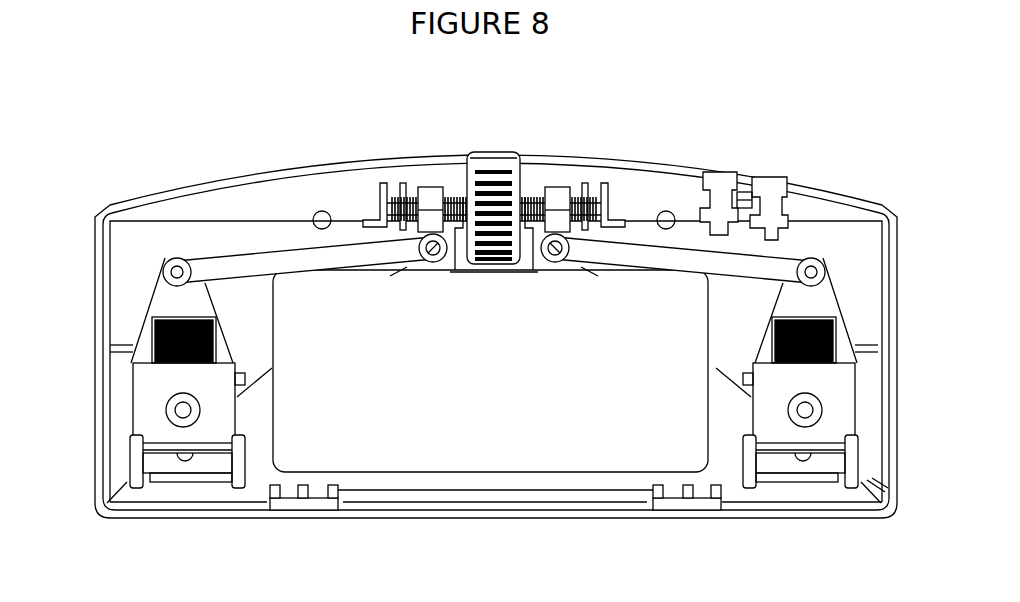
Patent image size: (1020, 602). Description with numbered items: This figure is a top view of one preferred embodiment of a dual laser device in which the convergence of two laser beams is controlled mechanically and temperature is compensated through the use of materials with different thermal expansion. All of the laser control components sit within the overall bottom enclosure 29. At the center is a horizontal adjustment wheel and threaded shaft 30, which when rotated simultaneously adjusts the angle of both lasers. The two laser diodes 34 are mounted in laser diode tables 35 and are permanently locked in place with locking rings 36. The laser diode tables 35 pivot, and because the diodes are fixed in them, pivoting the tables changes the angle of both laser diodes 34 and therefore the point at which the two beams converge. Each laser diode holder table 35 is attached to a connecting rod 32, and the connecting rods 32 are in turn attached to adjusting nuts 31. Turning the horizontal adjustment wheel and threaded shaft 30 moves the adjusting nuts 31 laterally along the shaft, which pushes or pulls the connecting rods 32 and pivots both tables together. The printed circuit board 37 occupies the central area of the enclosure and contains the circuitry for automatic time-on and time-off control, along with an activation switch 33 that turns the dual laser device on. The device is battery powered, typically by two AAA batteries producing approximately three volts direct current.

The bottom enclosure 29 is at (148, 230).
The horizontal adjustment wheel and threaded shaft 30 is at (510, 157).
The adjusting nuts 31 is at (432, 193).
The connecting rods 32 is at (283, 258).
The activation switch 33 is at (722, 172).
The laser diodes 34 is at (143, 338).
The laser diode tables 35 is at (178, 312).
The locking rings 36 is at (163, 470).
The printed circuit board 37 is at (520, 430).